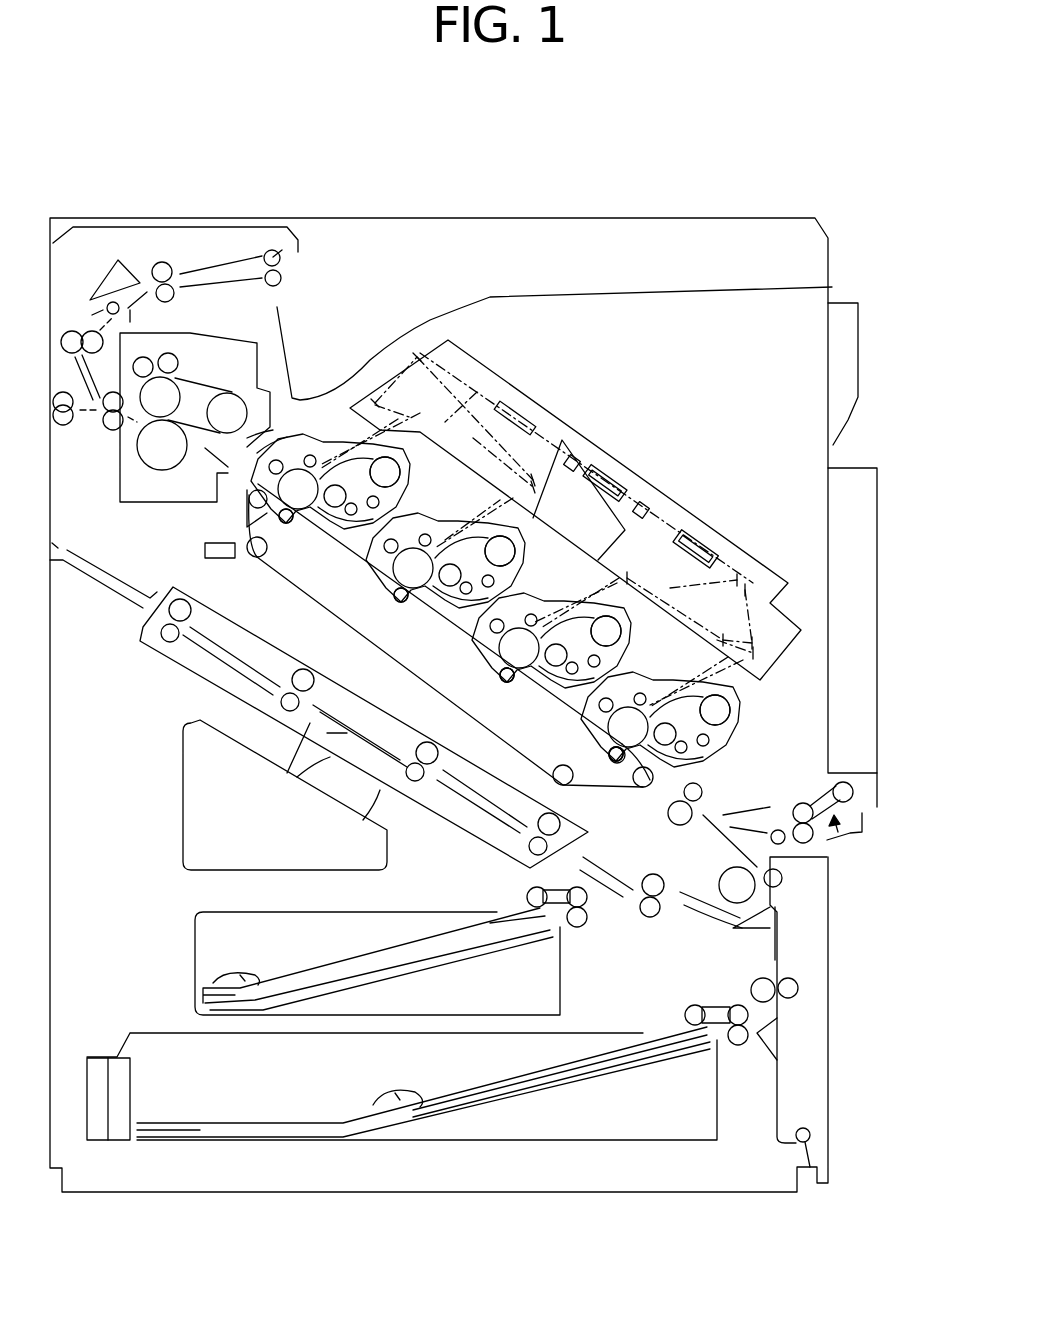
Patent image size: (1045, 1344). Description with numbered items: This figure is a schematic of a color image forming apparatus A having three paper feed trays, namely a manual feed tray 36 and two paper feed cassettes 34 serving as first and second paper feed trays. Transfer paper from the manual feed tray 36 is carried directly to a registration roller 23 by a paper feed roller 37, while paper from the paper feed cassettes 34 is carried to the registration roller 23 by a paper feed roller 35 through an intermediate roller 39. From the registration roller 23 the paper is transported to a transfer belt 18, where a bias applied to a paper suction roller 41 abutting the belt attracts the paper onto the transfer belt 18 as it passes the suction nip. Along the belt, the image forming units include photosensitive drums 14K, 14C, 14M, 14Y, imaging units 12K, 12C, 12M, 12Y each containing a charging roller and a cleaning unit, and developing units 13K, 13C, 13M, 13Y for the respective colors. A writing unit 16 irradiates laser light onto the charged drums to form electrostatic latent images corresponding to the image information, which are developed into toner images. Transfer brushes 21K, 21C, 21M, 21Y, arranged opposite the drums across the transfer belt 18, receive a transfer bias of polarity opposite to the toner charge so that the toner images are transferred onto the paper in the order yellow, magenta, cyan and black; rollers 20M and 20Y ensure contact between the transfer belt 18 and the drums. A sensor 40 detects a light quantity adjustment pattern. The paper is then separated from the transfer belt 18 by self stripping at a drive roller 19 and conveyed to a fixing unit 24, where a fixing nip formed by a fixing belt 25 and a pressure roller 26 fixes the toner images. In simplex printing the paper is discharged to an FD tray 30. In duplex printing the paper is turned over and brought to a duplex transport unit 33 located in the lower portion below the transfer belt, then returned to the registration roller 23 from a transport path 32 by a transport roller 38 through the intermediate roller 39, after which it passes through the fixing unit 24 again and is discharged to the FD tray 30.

The image forming apparatus A is at (742, 206).
The imaging unit 12K is at (315, 462).
The imaging unit 12C is at (425, 545).
The imaging unit 12M is at (545, 590).
The imaging unit 12Y is at (753, 680).
The developing unit 13K is at (420, 430).
The developing unit 13C is at (540, 520).
The developing unit 13M is at (613, 573).
The developing unit 13Y is at (747, 720).
The photosensitive drum 14K is at (330, 435).
The photosensitive drum 14C is at (372, 572).
The photosensitive drum 14M is at (478, 642).
The photosensitive drum 14Y is at (645, 675).
The writing unit 16 is at (627, 460).
The transfer belt 18 is at (270, 570).
The drive roller 19 is at (249, 495).
The roller 20M is at (508, 683).
The roller 20Y is at (608, 748).
The transfer brush 21K is at (270, 513).
The transfer brush 21C is at (392, 596).
The transfer brush 21M is at (497, 678).
The transfer brush 21Y is at (606, 762).
The registration roller 23 is at (684, 822).
The fixing unit 24 is at (222, 330).
The fixing belt 25 is at (200, 380).
The pressure roller 26 is at (136, 451).
The FD tray 30 is at (600, 292).
The transport path 32 is at (287, 773).
The duplex transport unit 33 is at (173, 663).
The paper feed cassette 34 is at (193, 940).
The paper feed roller 35 is at (602, 918).
The manual feed tray 36 is at (877, 578).
The paper feed roller 37 is at (862, 840).
The transport roller 38 is at (363, 820).
The intermediate roller 39 is at (780, 940).
The sensor 40 is at (204, 550).
The paper suction roller 41 is at (705, 790).